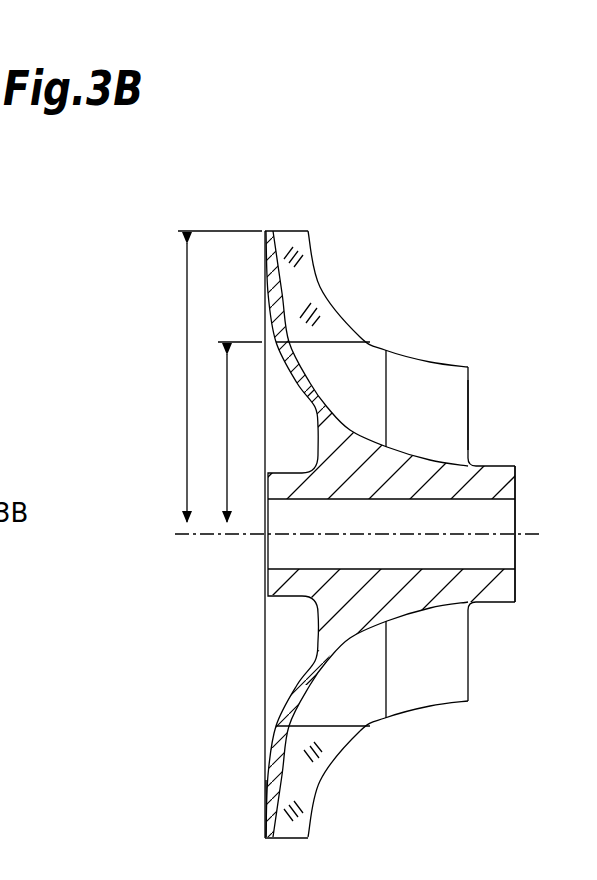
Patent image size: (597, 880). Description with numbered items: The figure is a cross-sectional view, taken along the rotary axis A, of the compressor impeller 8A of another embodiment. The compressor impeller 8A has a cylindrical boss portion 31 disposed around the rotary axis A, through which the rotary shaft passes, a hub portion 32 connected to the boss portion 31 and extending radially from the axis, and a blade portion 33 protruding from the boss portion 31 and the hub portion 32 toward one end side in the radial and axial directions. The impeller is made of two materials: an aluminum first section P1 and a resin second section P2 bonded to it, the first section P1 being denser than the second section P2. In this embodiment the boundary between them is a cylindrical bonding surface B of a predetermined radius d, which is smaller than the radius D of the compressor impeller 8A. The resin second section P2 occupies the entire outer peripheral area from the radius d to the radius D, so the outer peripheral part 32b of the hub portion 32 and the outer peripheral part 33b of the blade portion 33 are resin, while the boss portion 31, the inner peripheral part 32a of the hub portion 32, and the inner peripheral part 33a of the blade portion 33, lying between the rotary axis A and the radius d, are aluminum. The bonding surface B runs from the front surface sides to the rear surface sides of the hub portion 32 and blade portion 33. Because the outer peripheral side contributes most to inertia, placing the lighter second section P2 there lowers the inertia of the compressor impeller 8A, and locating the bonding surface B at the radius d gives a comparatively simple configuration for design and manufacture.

The compressor impeller 8A is at (443, 230).
The boss portion 31 is at (515, 480).
The hub portion 32 is at (262, 262).
The inner peripheral part of the hub portion 32a is at (322, 653).
The outer peripheral part of the hub portion 32b is at (268, 777).
The blade portion 33 is at (428, 362).
The inner peripheral part of the blade portion 33a is at (427, 693).
The outer peripheral part of the blade portion 33b is at (312, 785).
The first section P1 is at (488, 425).
The second section P2 is at (322, 272).
The rotary axis A is at (478, 537).
The bonding surface B is at (290, 332).
The radius of the compressor impeller D is at (213, 376).
The predetermined radius d is at (234, 432).